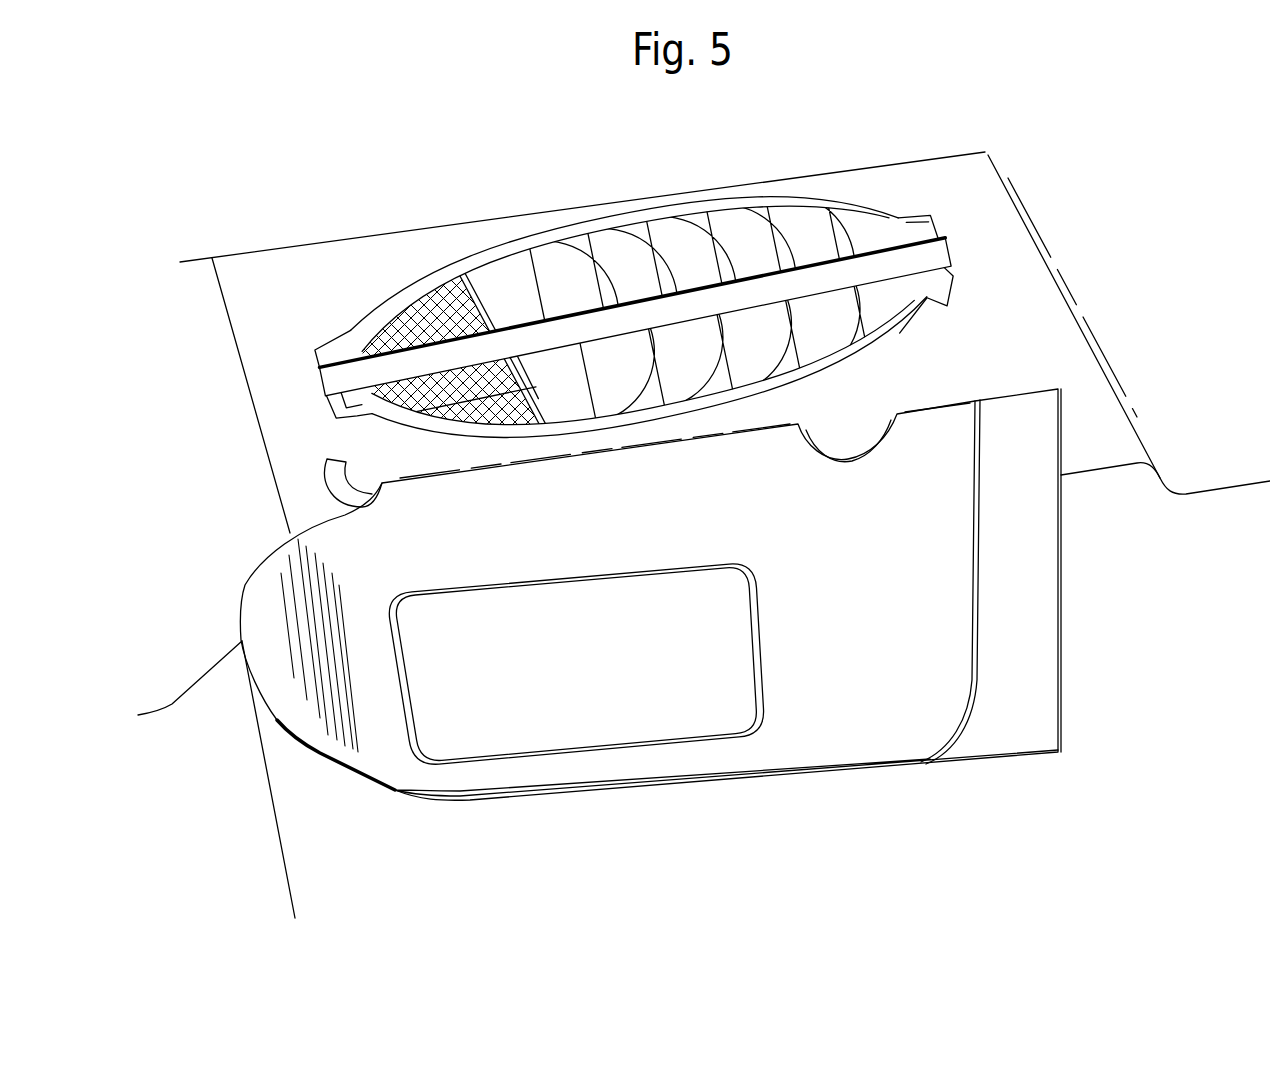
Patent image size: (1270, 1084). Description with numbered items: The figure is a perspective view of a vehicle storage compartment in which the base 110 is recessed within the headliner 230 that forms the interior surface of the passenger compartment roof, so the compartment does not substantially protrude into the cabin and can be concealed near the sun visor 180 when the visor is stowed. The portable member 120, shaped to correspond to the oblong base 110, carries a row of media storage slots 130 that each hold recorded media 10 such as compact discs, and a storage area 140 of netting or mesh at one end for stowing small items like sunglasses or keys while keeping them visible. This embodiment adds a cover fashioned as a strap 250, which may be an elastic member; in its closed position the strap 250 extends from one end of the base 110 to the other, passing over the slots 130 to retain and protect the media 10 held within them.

The media 10 is at (612, 297).
The base 110 is at (545, 272).
The portable member 120 is at (829, 214).
The media storage slot 130 is at (503, 278).
The storage area 140 is at (388, 326).
The sun visor 180 is at (260, 600).
The headliner 230 is at (296, 272).
The strap 250 is at (338, 390).